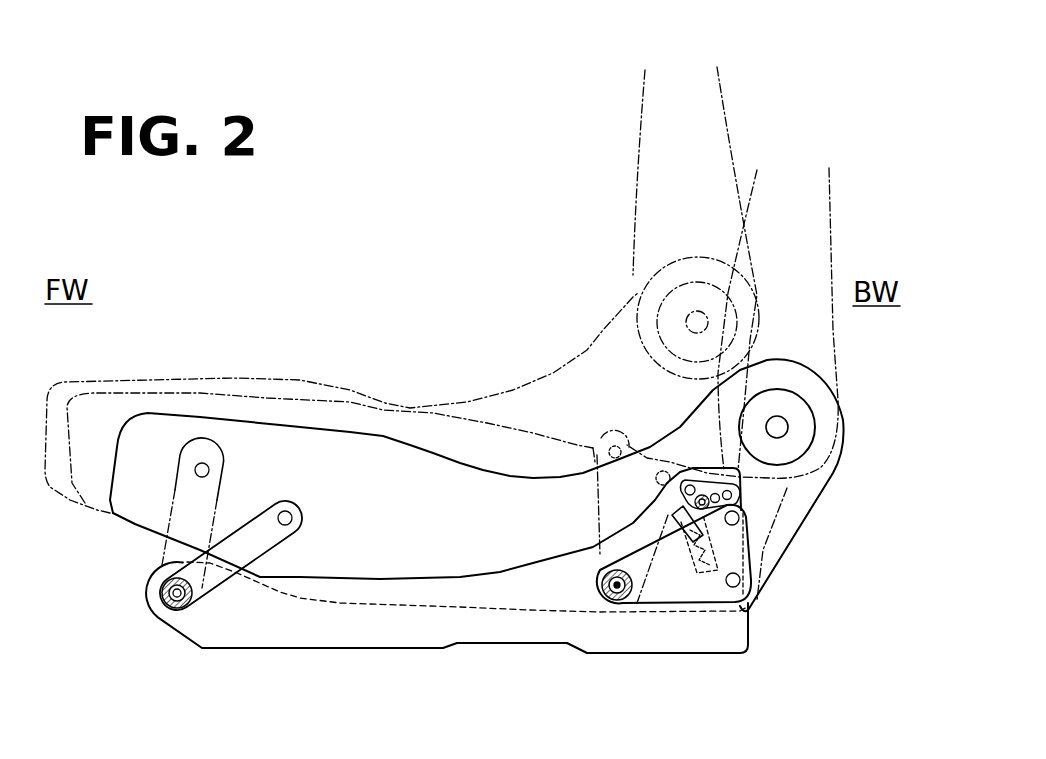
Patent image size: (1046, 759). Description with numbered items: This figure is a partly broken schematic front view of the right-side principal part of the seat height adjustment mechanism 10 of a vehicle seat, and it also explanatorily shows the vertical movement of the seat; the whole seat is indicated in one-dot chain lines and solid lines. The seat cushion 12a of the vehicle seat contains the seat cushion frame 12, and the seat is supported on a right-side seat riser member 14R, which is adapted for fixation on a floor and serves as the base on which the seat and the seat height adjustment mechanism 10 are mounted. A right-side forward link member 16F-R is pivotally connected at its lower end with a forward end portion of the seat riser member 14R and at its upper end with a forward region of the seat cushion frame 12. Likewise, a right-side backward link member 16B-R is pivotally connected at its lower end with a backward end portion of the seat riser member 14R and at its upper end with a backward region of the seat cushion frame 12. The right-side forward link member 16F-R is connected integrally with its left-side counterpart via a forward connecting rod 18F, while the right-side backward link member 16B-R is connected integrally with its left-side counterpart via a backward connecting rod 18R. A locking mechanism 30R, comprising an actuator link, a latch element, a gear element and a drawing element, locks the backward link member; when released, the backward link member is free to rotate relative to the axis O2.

The seat height adjustment mechanism 10 is at (720, 613).
The seat cushion frame 12 is at (383, 445).
The seat cushion 12a is at (175, 437).
The right-side seat riser member 14R is at (375, 642).
The right-side forward link member 16F-R is at (230, 577).
The right-side backward link member 16B-R is at (680, 593).
The forward connecting rod 18F is at (160, 612).
The backward connecting rod 18R is at (598, 595).
The axis O2 is at (612, 594).
The right-side locking mechanism 30R is at (712, 482).